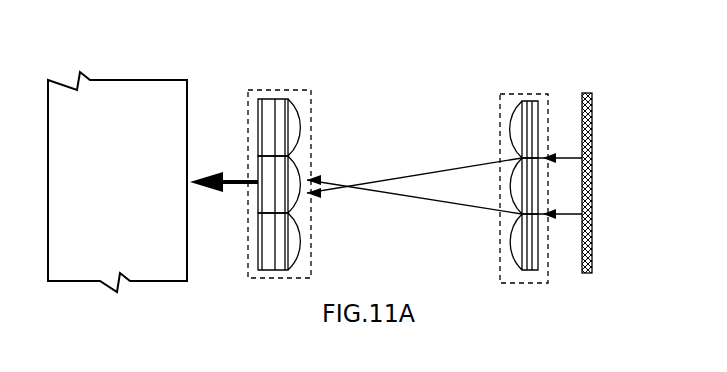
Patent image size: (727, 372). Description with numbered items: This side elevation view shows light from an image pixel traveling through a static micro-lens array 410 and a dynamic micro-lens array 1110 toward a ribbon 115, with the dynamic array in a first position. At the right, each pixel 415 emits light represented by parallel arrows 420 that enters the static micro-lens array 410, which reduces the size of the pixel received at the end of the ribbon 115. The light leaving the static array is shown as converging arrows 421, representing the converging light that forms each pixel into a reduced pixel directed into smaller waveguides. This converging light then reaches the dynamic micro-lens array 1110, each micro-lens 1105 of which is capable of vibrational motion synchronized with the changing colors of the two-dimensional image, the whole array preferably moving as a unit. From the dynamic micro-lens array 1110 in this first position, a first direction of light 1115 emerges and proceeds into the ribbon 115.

The ribbon 115 is at (102, 148).
The dynamic micro-lens array 1110 is at (304, 169).
The micro-lens 1105 is at (277, 193).
The first direction of light 1115 is at (225, 187).
The converging arrows 421 is at (392, 180).
The static micro-lens array 410 is at (502, 99).
The parallel arrows 420 is at (560, 155).
The pixel 415 is at (592, 123).